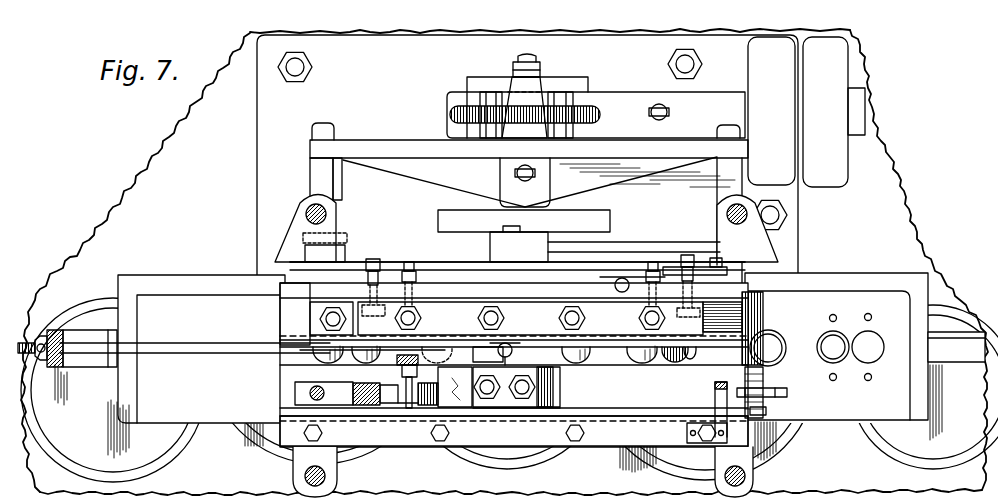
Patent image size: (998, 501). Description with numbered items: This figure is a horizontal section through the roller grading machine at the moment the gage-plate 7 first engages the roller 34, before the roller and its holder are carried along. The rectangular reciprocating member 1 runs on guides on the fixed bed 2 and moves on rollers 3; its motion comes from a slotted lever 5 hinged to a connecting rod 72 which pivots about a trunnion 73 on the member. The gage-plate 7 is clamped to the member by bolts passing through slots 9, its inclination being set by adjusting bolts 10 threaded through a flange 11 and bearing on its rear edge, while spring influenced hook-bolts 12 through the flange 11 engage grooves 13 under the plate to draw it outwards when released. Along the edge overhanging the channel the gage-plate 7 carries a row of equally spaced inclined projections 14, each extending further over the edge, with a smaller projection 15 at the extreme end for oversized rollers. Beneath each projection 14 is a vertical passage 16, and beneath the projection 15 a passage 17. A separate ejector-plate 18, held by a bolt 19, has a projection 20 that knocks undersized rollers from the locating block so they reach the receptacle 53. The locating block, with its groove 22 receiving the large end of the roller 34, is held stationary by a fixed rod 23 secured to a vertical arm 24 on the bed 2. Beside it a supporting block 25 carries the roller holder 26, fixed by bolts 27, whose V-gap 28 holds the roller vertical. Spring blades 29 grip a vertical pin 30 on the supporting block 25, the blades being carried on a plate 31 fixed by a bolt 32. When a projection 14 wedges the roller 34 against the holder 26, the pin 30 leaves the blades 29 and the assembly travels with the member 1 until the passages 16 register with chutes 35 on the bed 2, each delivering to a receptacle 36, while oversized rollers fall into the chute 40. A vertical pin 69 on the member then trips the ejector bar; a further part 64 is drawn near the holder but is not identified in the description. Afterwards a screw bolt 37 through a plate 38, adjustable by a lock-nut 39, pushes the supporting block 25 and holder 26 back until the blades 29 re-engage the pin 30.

The reciprocating member 1 is at (632, 430).
The fixed bed 2 is at (160, 414).
The rollers 3 is at (296, 262).
The slotted lever 5 is at (540, 248).
The gage-plate 7 is at (578, 305).
The slots 9 is at (412, 312).
The adjusting bolts 10 is at (410, 260).
The flange 11 is at (557, 292).
The hook-bolts 12 is at (374, 258).
The grooves 13 is at (705, 300).
The projections 14 is at (512, 344).
The smaller projection 15 is at (696, 346).
The vertical passages 16 is at (637, 358).
The vertical passage 17 is at (680, 358).
The ejector-plate 18 is at (315, 327).
The bolt 19 is at (320, 318).
The projection 20 is at (318, 350).
The groove 22 is at (639, 318).
The fixed rod 23 is at (166, 344).
The vertical arm 24 is at (52, 332).
The supporting block 25 is at (556, 400).
The roller holder 26 is at (520, 425).
The bolts 27 is at (484, 402).
The V-gap 28 is at (522, 400).
The spring blades 29 is at (368, 405).
The vertical pin 30 is at (410, 410).
The plate 31 is at (298, 386).
The bolt 32 is at (323, 387).
The roller 34 is at (480, 322).
The chutes 35 is at (770, 332).
The receptacle 36 is at (705, 442).
The screw bolt 37 is at (787, 391).
The plate 38 is at (768, 412).
The lock-nut 39 is at (765, 382).
The chute 40 is at (870, 318).
The receptacle 53 is at (509, 359).
The bracket 64 is at (714, 384).
The vertical pin 69 is at (620, 278).
The connecting rod 72 is at (396, 248).
The trunnion 73 is at (340, 258).